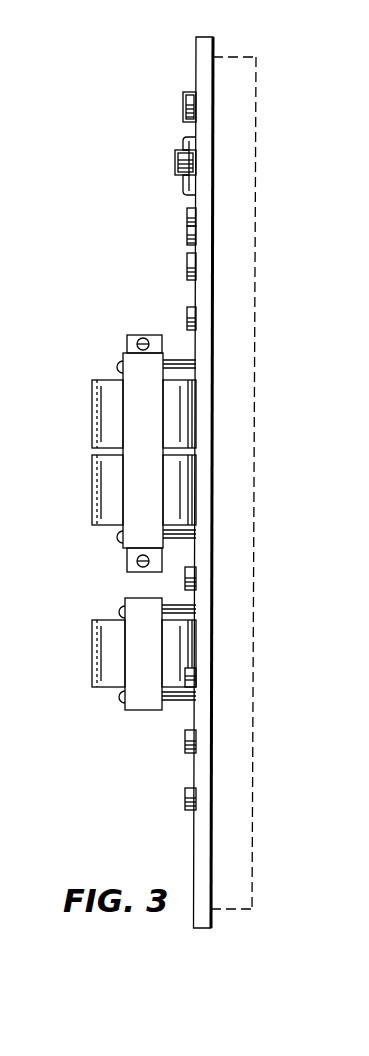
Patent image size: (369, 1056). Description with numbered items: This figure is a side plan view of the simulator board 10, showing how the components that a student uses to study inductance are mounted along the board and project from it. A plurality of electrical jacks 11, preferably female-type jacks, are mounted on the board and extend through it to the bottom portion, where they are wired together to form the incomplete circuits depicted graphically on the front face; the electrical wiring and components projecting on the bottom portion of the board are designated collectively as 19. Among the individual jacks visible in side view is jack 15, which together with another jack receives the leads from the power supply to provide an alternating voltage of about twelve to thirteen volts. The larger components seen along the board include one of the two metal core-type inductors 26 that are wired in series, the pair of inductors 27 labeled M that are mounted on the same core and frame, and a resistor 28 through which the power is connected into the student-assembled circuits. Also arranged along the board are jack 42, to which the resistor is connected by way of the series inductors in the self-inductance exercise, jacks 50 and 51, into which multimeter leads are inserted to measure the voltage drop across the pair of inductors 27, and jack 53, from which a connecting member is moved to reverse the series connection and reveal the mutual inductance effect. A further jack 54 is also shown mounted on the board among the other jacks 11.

The simulator board 10 is at (194, 38).
The electrical jacks 11 is at (192, 97).
The jack 15 is at (183, 98).
The electrical wiring and components projecting on the bottom portion of the board 19 is at (256, 57).
The metal core-type inductor 26 is at (98, 632).
The pair of inductors mounted on the same core and frame 27 is at (103, 394).
The resistor 28 is at (177, 163).
The jack 42 is at (187, 265).
The jack 50 is at (179, 172).
The jack 51 is at (185, 742).
The jack 53 is at (187, 318).
The terminal block 54 is at (187, 218).